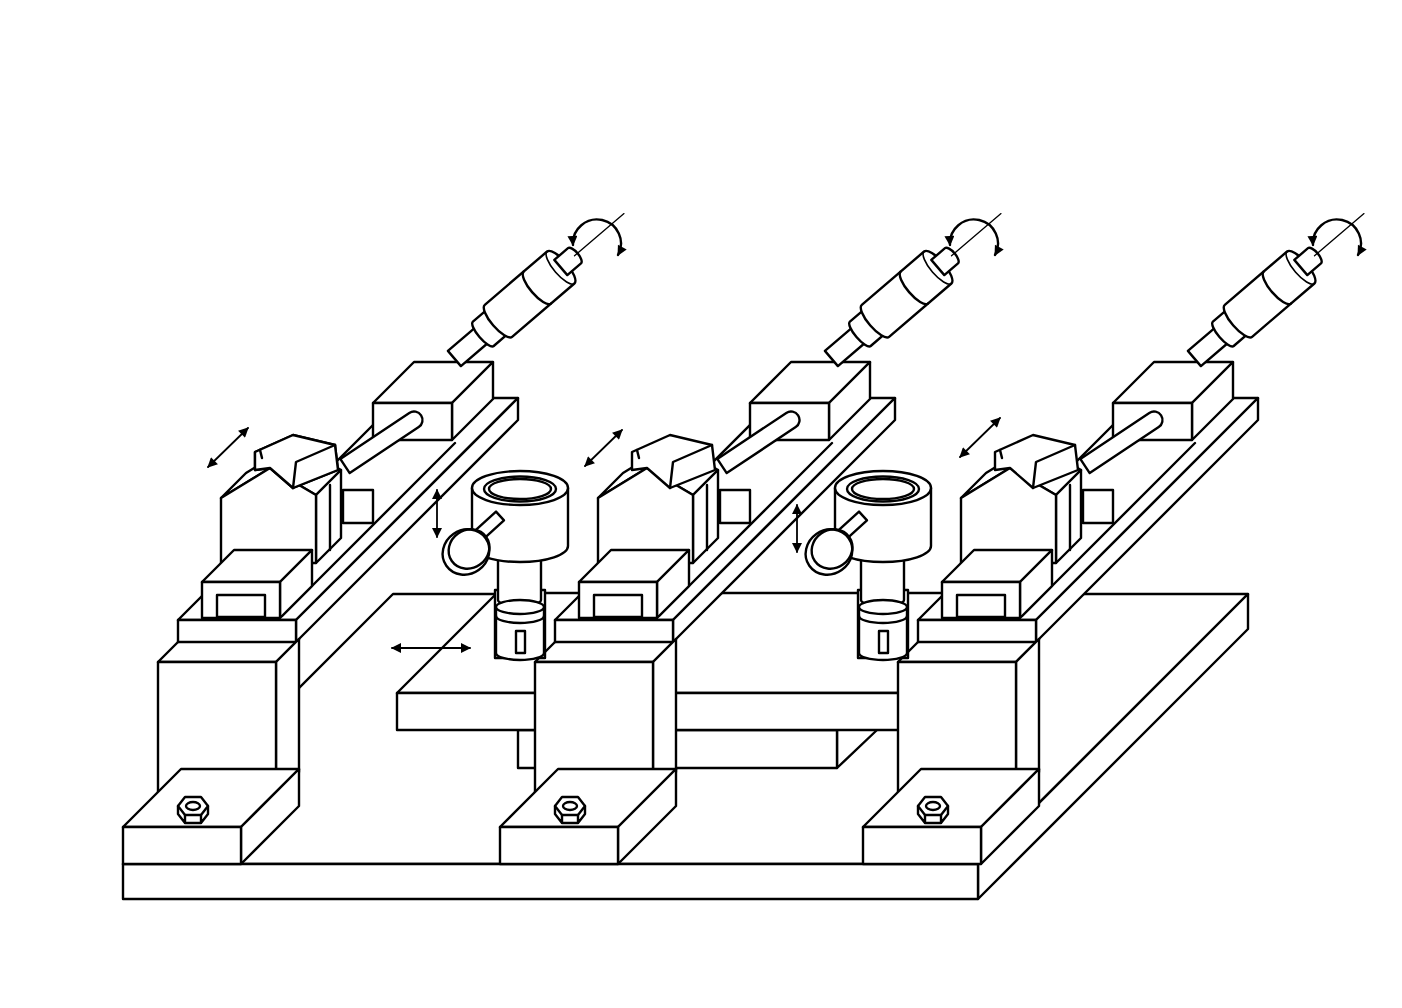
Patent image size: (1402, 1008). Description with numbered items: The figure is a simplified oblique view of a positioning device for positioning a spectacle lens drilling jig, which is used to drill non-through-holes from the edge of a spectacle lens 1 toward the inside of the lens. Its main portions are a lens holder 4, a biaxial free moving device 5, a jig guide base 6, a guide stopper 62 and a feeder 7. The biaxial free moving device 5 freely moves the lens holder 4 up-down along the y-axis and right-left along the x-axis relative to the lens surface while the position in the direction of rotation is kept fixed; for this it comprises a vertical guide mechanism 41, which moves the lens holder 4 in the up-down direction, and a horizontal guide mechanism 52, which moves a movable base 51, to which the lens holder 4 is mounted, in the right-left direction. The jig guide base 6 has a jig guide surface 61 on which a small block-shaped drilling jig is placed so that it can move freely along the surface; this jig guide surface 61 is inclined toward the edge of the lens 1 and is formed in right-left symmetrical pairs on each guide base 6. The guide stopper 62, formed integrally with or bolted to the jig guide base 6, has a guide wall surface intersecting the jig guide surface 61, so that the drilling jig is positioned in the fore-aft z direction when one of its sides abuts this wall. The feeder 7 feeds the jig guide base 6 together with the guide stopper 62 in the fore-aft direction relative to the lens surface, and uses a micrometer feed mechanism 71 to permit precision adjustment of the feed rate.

The spectacle lens 1 is at (743, 480).
The lens holder 4 is at (677, 535).
The vertical guide mechanism 41 is at (493, 643).
The biaxial free moving device 5 is at (686, 717).
The movable base 51 is at (412, 722).
The horizontal guide mechanism 52 is at (515, 742).
The jig guide base 6 is at (630, 449).
The jig guide surface 61 is at (307, 483).
The guide stopper 62 is at (298, 470).
The feeder 7 is at (852, 344).
The micrometer feed mechanism 71 is at (507, 290).